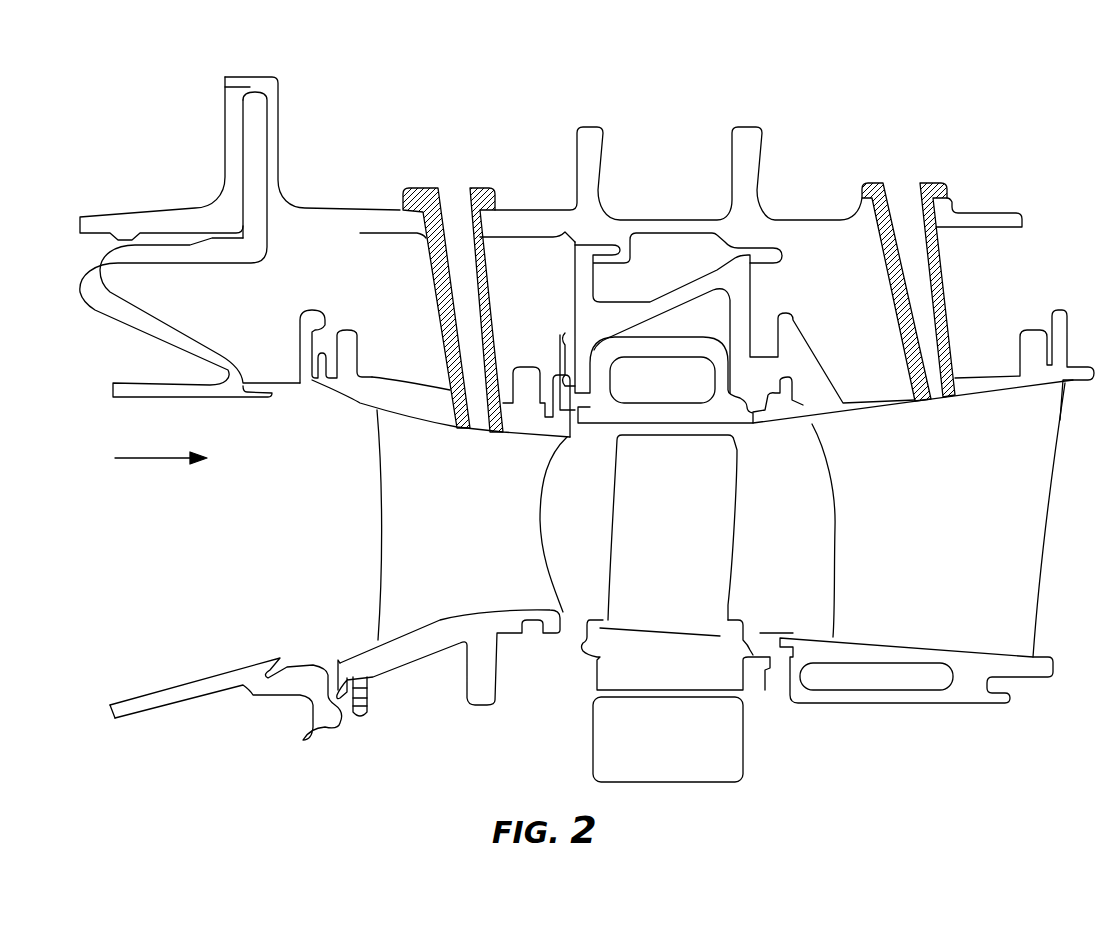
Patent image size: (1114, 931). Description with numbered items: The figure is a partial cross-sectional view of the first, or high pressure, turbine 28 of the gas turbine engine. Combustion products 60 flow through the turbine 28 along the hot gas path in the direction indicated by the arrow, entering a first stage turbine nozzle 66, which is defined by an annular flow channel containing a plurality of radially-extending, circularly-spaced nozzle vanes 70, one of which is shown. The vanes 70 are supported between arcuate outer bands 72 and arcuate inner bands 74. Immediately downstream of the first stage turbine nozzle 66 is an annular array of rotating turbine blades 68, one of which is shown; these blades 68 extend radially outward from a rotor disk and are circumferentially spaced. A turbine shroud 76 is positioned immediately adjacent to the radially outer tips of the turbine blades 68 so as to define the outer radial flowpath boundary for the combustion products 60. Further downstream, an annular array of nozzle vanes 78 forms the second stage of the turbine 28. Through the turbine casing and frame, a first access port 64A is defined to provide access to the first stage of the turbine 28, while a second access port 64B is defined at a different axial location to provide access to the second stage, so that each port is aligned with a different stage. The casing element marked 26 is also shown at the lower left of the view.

The first turbine 28 is at (491, 80).
The first access port 64A is at (449, 178).
The second access port 64B is at (902, 172).
The arcuate outer bands 72 is at (417, 395).
The turbine shroud 76 is at (693, 348).
The nozzle vanes of second stage 78 is at (926, 520).
The nozzle vanes 70 is at (466, 554).
The first stage turbine nozzle 66 is at (356, 543).
The turbine blades 68 is at (678, 541).
The arcuate inner bands 74 is at (403, 652).
The casing strut 26 is at (152, 695).
The combustion products 60 is at (122, 465).